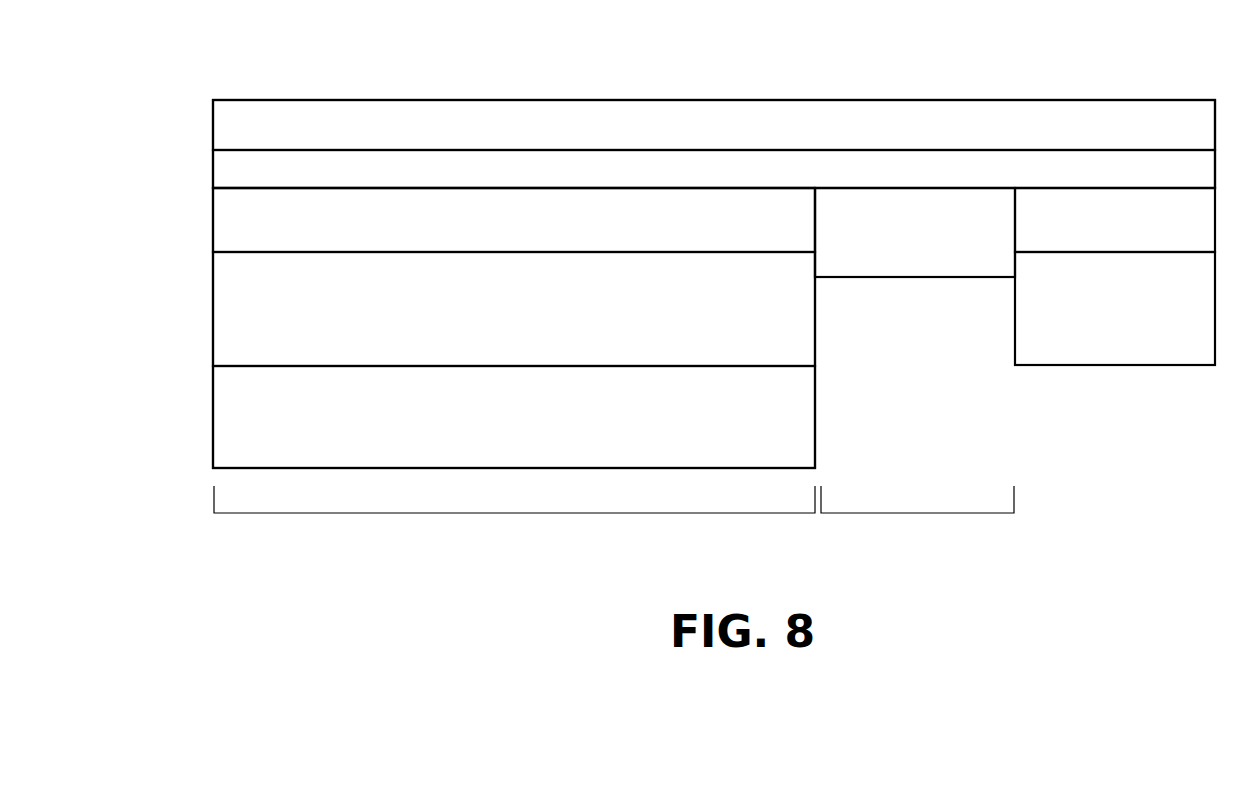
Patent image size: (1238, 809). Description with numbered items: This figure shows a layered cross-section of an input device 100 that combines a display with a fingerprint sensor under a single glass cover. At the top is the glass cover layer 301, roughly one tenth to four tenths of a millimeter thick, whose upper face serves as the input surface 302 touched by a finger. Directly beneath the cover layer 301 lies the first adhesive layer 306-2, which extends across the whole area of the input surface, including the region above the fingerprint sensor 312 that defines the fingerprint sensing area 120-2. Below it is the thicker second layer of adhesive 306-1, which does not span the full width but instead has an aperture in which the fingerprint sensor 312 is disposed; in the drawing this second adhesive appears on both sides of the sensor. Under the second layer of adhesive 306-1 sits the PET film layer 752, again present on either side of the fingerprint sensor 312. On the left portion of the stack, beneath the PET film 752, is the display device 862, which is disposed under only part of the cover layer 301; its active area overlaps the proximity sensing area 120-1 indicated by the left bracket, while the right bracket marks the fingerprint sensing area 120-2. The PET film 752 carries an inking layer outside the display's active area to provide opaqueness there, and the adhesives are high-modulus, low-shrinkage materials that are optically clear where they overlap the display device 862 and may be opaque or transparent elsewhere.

The input device 100 is at (240, 88).
The input surface 302 is at (1037, 98).
The cover layer 301 is at (714, 125).
The first adhesive layer 306-2 is at (714, 169).
The second layer of adhesive 306-1 is at (714, 220).
The fingerprint sensor 312 is at (915, 232).
The PET film layer 752 is at (714, 309).
The display device 862 is at (514, 417).
The proximity sensing area 120-1 is at (515, 513).
The fingerprint sensing area 120-2 is at (917, 513).